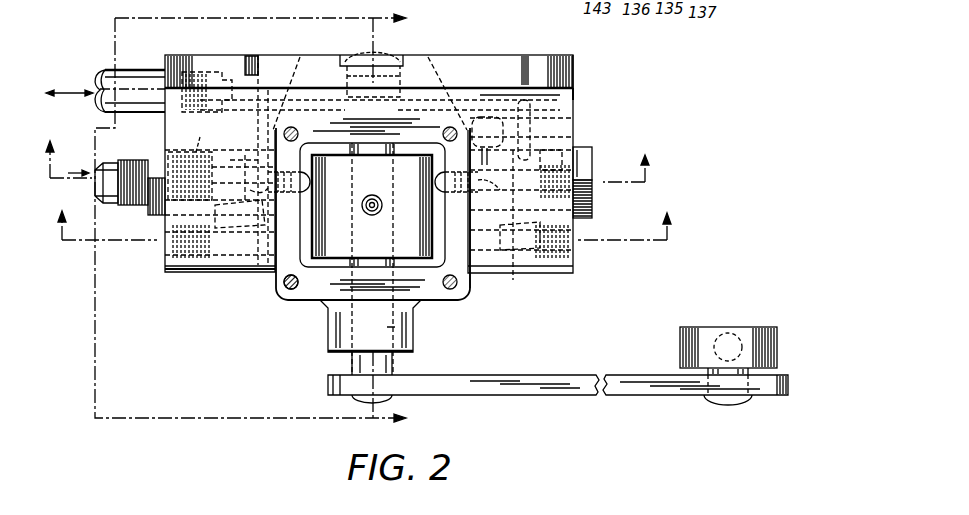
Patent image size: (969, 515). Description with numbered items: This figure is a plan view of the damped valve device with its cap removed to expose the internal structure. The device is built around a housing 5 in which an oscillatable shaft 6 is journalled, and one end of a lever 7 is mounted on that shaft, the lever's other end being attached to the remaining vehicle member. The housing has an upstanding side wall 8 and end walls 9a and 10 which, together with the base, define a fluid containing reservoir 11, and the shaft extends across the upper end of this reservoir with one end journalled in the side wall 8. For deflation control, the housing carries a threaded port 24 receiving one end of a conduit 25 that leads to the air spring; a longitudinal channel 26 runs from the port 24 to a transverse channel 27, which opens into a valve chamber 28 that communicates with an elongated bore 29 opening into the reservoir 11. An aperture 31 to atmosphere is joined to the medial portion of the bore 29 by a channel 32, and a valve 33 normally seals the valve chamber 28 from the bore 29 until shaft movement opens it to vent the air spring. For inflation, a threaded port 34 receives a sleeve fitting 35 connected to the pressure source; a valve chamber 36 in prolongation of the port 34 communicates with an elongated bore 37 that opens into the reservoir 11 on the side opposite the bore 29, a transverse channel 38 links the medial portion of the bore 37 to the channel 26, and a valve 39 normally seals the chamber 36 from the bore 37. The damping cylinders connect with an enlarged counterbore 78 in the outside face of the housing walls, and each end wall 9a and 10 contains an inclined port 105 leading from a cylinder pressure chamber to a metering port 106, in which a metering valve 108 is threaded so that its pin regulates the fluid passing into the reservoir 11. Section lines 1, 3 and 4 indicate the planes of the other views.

The section line 1- 1 is at (265, 219).
The section line 3- 3 is at (349, 150).
The section line 4- 4 is at (361, 223).
The housing 5 is at (288, 302).
The oscillatable shaft 6 is at (388, 330).
The lever 7 is at (532, 391).
The side wall 8 is at (461, 57).
The end wall 9a is at (165, 268).
The end wall 10 is at (576, 96).
The reservoir 11 is at (287, 268).
The threaded port 24 is at (196, 70).
The conduit 25 is at (108, 70).
The channel 26 is at (313, 95).
The channel 27 is at (550, 118).
The valve chamber 28 is at (541, 150).
The elongated bore 29 is at (462, 175).
The aperture 31 is at (487, 117).
The channel 32 is at (497, 150).
The valve 33 is at (478, 200).
The threaded port 34 is at (176, 152).
The sleeve fitting 35 is at (118, 205).
The valve chamber 36 is at (227, 152).
The elongated bore 37 is at (265, 198).
The channel 38 is at (259, 75).
The valve 39 is at (243, 175).
The enlarged counterbore 78 is at (204, 152).
The port 105 is at (215, 218).
The metering port 106 is at (466, 290).
The metering valve 108 is at (170, 248).